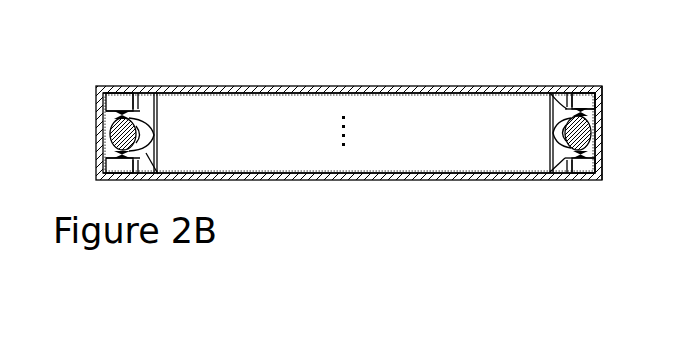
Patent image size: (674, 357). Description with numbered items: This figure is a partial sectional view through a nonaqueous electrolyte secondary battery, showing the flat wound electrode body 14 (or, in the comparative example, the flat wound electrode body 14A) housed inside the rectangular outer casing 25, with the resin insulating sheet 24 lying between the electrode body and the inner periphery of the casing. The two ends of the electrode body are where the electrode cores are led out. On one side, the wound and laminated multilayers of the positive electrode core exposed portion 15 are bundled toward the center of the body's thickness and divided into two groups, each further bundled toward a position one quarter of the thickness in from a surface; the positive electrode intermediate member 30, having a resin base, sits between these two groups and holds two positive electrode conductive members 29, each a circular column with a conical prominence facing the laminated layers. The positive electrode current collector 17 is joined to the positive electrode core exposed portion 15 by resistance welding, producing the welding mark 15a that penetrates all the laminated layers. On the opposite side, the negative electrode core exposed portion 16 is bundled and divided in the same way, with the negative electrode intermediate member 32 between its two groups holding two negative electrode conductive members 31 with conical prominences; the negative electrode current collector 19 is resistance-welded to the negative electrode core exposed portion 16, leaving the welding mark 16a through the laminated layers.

The flat wound electrode body 14 is at (446, 110).
The flat wound electrode body 14A is at (343, 131).
The positive electrode core exposed portion 15 is at (550, 101).
The welding mark 15a is at (581, 109).
The negative electrode core exposed portion 16 is at (150, 112).
The welding mark 16a is at (125, 112).
The positive electrode current collector 17 is at (600, 88).
The negative electrode current collector 19 is at (98, 87).
The insulating sheet 24 is at (300, 93).
The rectangular outer casing 25 is at (260, 86).
The positive electrode conductive member 29 is at (588, 121).
The positive electrode intermediate member 30 is at (591, 137).
The negative electrode conductive member 31 is at (112, 120).
The negative electrode intermediate member 32 is at (110, 134).